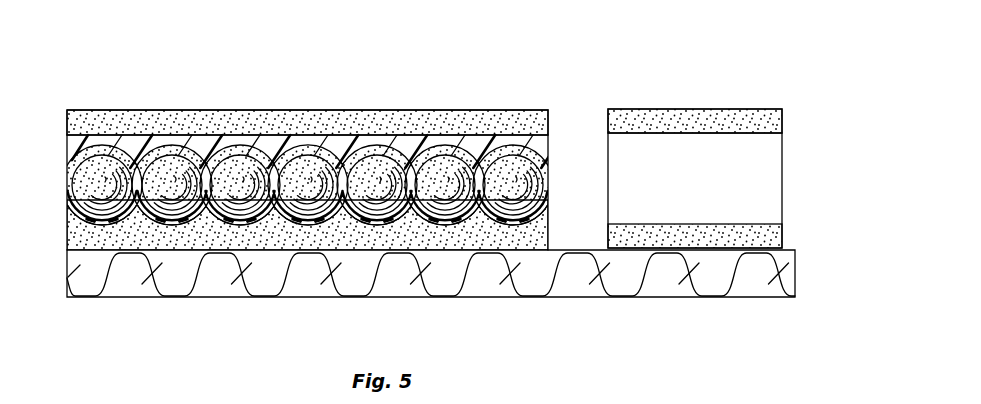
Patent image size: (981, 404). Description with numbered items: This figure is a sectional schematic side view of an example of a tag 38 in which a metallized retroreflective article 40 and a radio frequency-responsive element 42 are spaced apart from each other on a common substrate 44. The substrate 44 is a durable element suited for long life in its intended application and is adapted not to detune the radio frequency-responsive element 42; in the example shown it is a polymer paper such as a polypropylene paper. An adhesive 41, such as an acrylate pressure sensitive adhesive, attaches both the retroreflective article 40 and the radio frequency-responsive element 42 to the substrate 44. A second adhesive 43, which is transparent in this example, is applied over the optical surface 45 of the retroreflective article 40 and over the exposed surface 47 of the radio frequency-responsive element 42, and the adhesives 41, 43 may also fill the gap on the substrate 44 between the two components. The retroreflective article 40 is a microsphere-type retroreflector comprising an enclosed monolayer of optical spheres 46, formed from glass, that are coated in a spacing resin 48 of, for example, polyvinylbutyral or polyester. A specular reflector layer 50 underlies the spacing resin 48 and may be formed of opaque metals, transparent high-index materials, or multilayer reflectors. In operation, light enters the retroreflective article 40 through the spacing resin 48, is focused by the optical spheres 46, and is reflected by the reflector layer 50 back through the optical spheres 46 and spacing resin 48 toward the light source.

The tag 38 is at (754, 75).
The metallized retroreflective article 40 is at (57, 133).
The adhesive 41 is at (375, 238).
The radio frequency-responsive element 42 is at (783, 156).
The adhesive 43 is at (503, 115).
The substrate 44 is at (298, 284).
The optical surface 45 is at (320, 133).
The optical spheres 46 is at (548, 172).
The exposed surface 47 is at (705, 130).
The spacing resin 48 is at (548, 142).
The specular reflector layer 50 is at (545, 216).